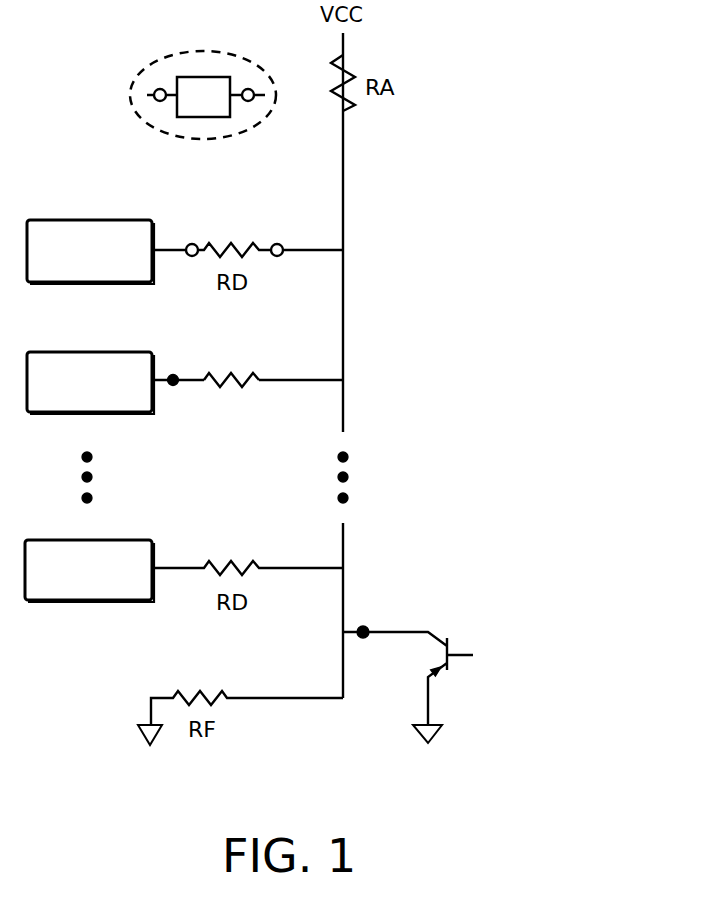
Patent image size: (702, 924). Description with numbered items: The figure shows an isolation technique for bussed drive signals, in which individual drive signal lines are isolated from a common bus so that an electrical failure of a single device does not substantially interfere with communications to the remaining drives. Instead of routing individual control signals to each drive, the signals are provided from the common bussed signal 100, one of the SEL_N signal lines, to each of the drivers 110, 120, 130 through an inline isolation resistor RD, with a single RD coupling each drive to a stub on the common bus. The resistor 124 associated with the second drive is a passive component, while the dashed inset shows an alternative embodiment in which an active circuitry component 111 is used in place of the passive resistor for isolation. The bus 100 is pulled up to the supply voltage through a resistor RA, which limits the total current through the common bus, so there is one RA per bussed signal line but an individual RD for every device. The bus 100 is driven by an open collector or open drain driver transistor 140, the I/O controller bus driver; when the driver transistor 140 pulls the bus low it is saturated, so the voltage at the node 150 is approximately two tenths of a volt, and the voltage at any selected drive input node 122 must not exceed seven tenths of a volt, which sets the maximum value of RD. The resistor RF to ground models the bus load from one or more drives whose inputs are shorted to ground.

The bus 100 is at (344, 311).
The driver 110 is at (124, 220).
The active circuitry component 111 is at (235, 222).
The driver 120 is at (122, 352).
The drive input node 122 is at (174, 372).
The resistor 124 is at (231, 413).
The driver 130 is at (122, 540).
The driver transistor 140 is at (461, 668).
The node 150 is at (366, 620).